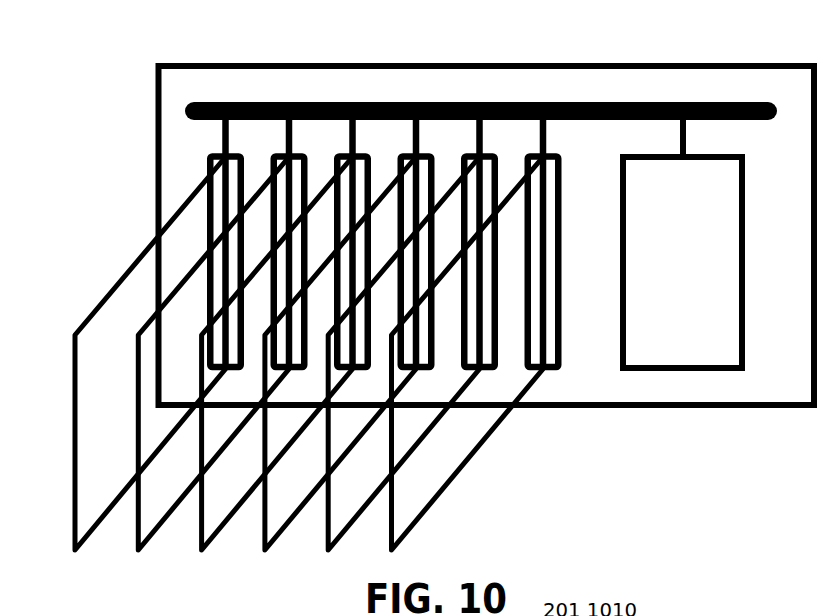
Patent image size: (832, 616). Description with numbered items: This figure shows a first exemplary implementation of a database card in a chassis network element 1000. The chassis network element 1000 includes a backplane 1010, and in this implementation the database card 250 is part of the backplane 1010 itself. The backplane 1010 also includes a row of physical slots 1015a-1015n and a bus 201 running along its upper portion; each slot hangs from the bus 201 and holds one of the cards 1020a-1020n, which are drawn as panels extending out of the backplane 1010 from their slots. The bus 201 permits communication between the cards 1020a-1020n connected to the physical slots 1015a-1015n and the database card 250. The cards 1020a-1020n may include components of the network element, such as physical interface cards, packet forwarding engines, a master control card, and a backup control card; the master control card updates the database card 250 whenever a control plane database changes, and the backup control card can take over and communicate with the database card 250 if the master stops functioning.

The chassis network element 1000 is at (132, 122).
The backplane 1010 is at (715, 50).
The bus 201 is at (615, 88).
The database card 250 is at (682, 244).
The physical slots 1015a-1015n is at (520, 146).
The cards 1020a-1020n is at (383, 312).